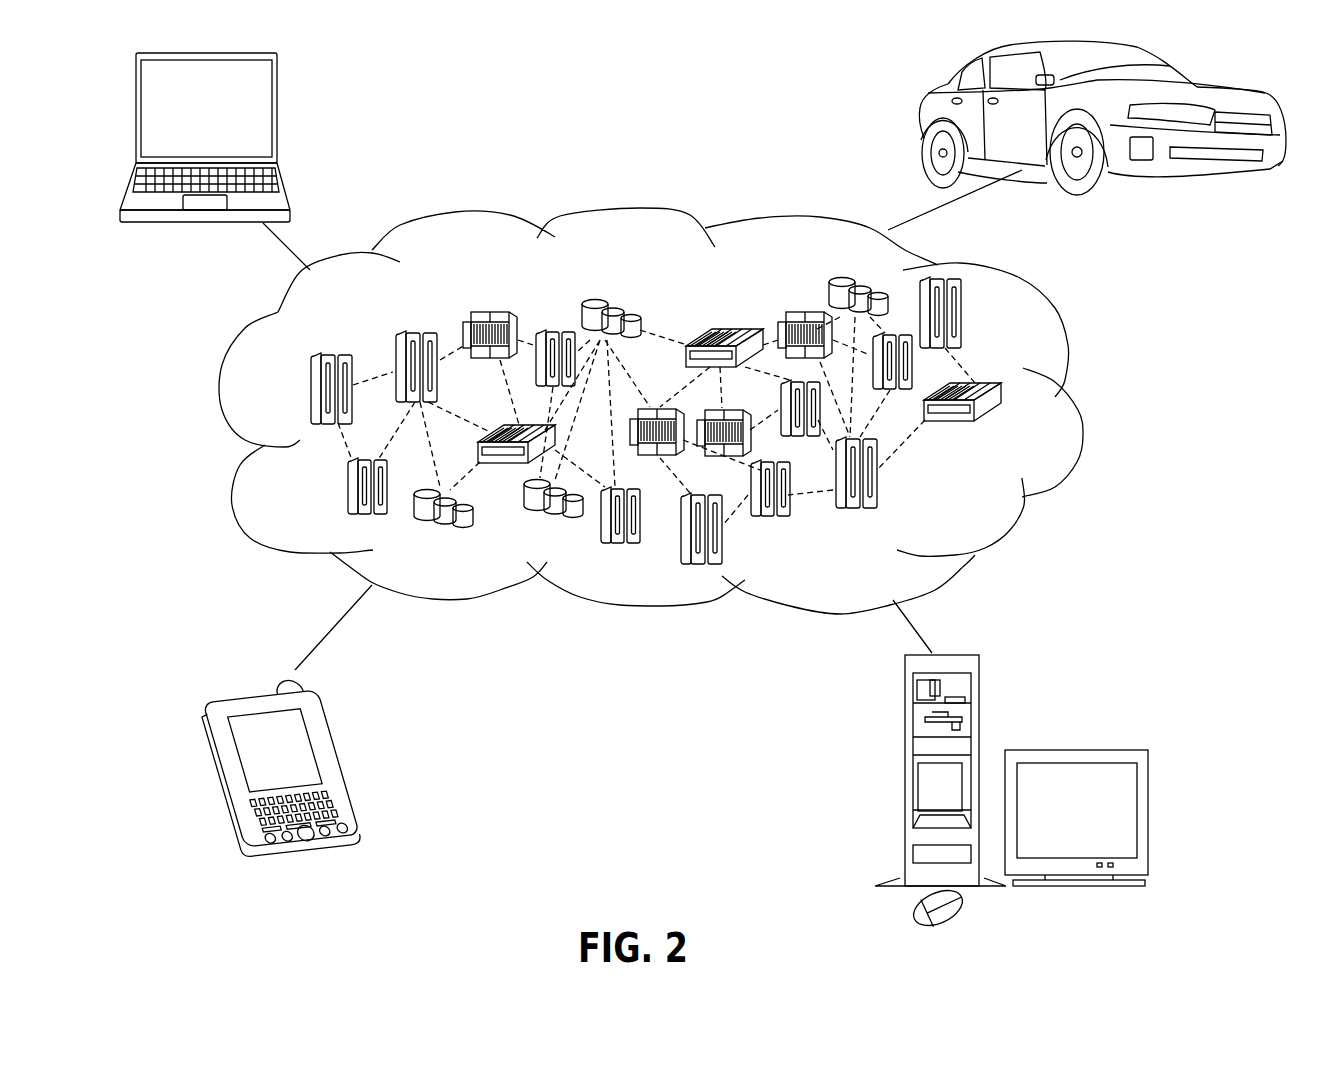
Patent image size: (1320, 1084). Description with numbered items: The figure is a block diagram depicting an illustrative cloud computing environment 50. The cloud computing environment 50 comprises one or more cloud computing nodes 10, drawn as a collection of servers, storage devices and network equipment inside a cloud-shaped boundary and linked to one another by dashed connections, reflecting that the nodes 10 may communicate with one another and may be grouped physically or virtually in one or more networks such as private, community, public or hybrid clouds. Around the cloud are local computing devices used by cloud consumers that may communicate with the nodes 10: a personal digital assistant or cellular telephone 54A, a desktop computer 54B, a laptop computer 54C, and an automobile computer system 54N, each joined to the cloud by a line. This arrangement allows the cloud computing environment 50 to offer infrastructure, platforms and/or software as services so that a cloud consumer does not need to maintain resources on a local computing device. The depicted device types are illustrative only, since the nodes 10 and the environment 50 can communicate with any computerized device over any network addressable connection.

The cloud computing node 10 is at (985, 508).
The cloud computing environment 50 is at (1073, 400).
The personal digital assistant (PDA) or cellular telephone 54A is at (333, 730).
The desktop computer 54B is at (903, 715).
The laptop computer 54C is at (277, 92).
The automobile computer system 54N is at (920, 110).